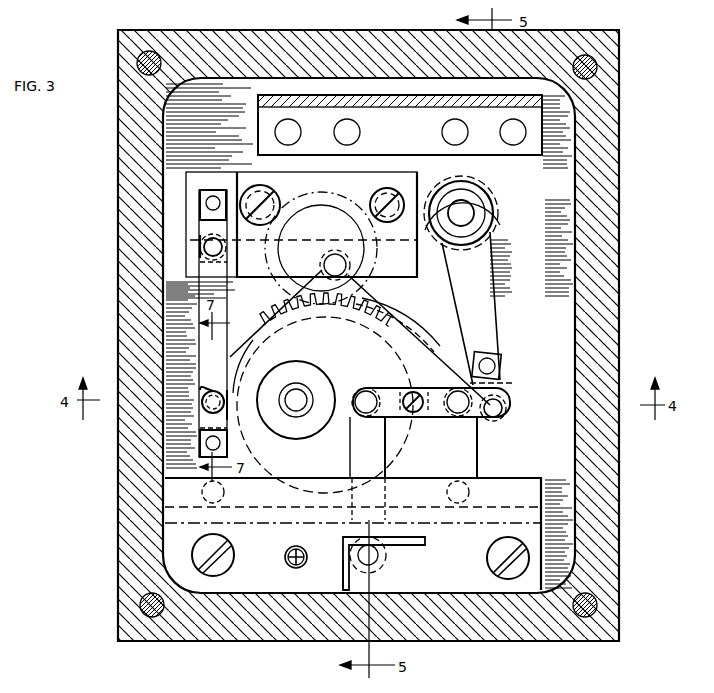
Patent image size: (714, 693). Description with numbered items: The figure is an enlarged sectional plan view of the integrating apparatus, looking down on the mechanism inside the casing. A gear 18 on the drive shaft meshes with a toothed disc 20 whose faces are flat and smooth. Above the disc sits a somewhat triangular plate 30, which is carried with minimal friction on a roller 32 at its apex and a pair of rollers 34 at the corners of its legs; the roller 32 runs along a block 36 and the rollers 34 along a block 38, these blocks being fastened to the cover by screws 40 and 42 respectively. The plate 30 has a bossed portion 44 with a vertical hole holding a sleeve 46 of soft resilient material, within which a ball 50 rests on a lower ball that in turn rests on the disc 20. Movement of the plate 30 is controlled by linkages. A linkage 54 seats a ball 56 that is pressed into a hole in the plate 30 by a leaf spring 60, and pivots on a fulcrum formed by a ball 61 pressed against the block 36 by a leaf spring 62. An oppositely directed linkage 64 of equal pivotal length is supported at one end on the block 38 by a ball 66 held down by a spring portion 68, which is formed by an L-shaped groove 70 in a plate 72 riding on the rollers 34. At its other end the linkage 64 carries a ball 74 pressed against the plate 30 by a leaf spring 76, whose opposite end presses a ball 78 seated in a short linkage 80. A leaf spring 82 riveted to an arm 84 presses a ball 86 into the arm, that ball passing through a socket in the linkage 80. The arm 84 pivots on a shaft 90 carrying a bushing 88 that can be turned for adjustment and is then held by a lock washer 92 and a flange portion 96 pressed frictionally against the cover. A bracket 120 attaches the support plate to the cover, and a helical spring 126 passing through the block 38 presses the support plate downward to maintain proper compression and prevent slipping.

The gear 18 is at (282, 281).
The toothed disc 20 is at (285, 306).
The plate 30 is at (405, 327).
The roller 32 is at (324, 258).
The rollers 34 is at (204, 498).
The block 36 is at (258, 170).
The block 38 is at (537, 478).
The screws 40 is at (250, 190).
The screws 42 is at (229, 565).
The bossed portion 44 is at (291, 432).
The sleeve 46 is at (303, 390).
The ball 50 is at (292, 385).
The linkage 54 is at (197, 352).
The ball 56 is at (197, 392).
The leaf spring 60 is at (200, 407).
The ball 61 is at (198, 247).
The leaf spring 62 is at (200, 233).
The linkage 64 is at (357, 456).
The ball 66 is at (376, 562).
The spring portion 68 is at (343, 578).
The L-shaped groove 70 is at (343, 545).
The plate 72 is at (530, 518).
The ball 74 is at (362, 388).
The leaf spring 76 is at (396, 388).
The ball 78 is at (446, 388).
The linkage 80 is at (508, 412).
The leaf spring 82 is at (500, 368).
The arm 84 is at (490, 335).
The ball 86 is at (506, 388).
The bushing 88 is at (492, 226).
The shaft 90 is at (470, 214).
The lock washer 92 is at (489, 238).
The flange portion 96 is at (498, 210).
The bracket 120 is at (258, 100).
The helical spring 126 is at (290, 553).